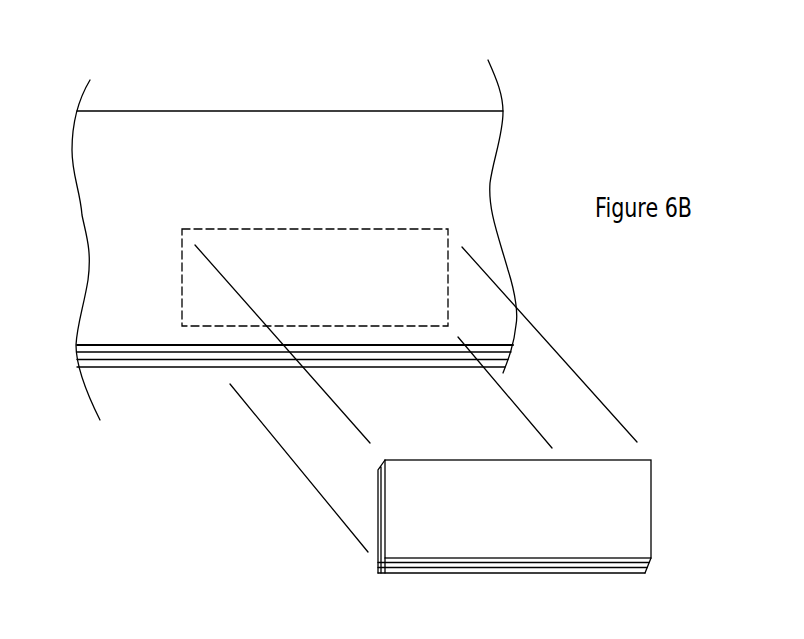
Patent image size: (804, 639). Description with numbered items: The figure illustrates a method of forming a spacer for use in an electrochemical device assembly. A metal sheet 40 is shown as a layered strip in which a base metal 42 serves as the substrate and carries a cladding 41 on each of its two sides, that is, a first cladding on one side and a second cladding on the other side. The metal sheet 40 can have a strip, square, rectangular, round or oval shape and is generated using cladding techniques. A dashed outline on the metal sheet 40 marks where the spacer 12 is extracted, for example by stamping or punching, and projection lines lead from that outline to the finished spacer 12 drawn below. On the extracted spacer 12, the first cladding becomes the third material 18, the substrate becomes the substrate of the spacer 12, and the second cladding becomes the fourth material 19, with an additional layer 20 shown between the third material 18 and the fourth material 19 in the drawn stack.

The metal sheet 40 is at (172, 78).
The cladding 41 is at (98, 257).
The base metal 42 is at (173, 355).
The spacer 12 is at (476, 477).
The third material 18 is at (642, 517).
The module layer 20 is at (647, 563).
The fourth material 19 is at (610, 571).